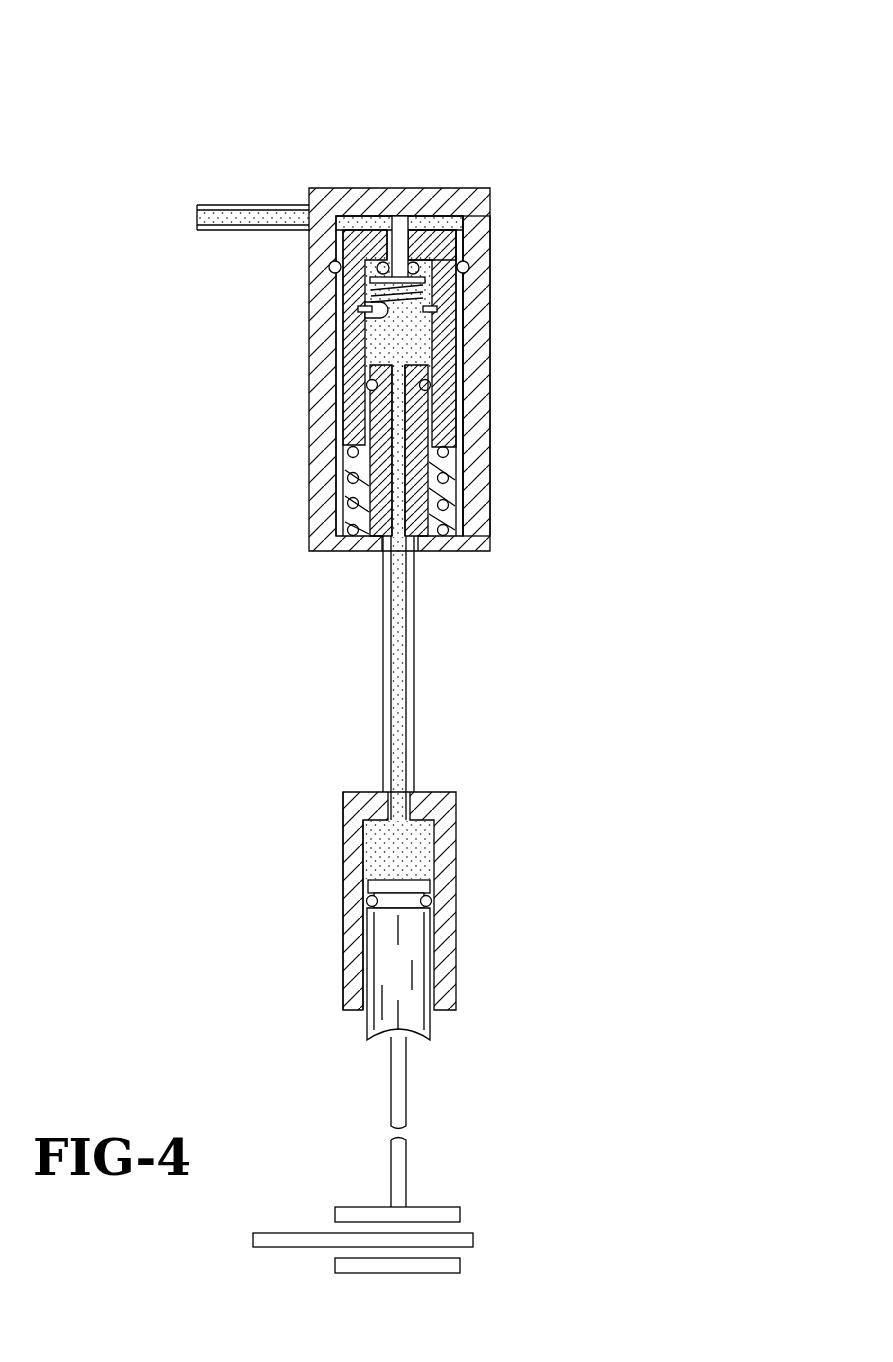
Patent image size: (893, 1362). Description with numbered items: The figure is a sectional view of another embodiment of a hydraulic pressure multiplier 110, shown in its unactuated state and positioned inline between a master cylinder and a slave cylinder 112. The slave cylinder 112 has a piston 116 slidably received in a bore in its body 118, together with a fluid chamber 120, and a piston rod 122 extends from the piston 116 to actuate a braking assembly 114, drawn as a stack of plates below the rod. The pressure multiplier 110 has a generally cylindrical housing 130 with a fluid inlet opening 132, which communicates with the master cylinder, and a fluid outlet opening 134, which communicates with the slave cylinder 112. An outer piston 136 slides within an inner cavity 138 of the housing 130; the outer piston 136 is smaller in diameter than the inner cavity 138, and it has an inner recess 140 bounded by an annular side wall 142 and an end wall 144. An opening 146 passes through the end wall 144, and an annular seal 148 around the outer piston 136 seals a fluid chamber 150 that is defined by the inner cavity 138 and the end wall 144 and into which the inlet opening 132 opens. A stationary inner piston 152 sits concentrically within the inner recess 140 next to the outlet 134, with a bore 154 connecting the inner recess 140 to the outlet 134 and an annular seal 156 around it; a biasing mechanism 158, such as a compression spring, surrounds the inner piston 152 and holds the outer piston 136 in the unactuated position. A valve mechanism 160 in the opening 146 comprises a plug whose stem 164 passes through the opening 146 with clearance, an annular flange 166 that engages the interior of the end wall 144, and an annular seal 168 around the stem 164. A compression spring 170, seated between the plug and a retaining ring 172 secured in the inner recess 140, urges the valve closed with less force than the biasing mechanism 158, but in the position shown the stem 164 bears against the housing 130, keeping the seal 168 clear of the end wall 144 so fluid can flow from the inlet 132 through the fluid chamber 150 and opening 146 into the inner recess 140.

The hydraulic pressure multiplier 110 is at (157, 117).
The slave cylinder 112 is at (460, 861).
The braking assembly 114 is at (484, 1223).
The piston 116 is at (424, 1023).
The body 118 is at (352, 945).
The fluid chamber 120 is at (386, 863).
The piston rod 122 is at (389, 1108).
The housing 130 is at (476, 483).
The fluid inlet opening 132 is at (298, 196).
The fluid outlet opening 134 is at (426, 561).
The outer piston 136 is at (467, 366).
The inner cavity 138 is at (334, 431).
The inner recess 140 is at (378, 355).
The annular side wall 142 is at (444, 416).
The end wall 144 is at (456, 218).
The opening 146 is at (419, 240).
The annular seal 148 is at (328, 268).
The fluid chamber 150 is at (371, 212).
The inner piston 152 is at (380, 490).
The bore 154 is at (385, 509).
The annular seal 156 is at (432, 388).
The biasing mechanism 158 is at (446, 506).
The valve mechanism 160 is at (437, 280).
The stem 164 is at (403, 226).
The annular flange 166 is at (368, 288).
The annular seal 168 is at (452, 252).
The compression spring 170 is at (390, 340).
The retaining ring 172 is at (438, 309).